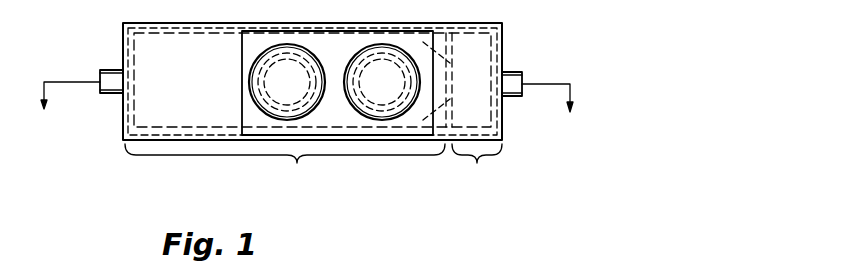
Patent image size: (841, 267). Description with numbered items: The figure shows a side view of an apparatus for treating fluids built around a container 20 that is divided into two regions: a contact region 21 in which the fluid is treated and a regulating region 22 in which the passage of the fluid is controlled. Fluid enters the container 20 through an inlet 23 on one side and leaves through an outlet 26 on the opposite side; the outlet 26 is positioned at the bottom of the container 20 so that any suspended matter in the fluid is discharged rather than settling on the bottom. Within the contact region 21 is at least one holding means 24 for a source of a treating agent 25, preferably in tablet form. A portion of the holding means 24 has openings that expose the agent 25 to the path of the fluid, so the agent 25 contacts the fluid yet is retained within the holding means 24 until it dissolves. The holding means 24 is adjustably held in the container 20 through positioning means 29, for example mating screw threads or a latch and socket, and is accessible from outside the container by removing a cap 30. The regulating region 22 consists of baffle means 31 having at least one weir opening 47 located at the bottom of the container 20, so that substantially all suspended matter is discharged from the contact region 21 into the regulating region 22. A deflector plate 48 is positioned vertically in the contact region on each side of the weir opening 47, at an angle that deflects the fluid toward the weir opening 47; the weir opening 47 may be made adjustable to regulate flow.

The container 20 is at (138, 144).
The contact region 21 is at (285, 163).
The regulating region 22 is at (477, 163).
The inlet 23 is at (110, 95).
The holding means 24 is at (367, 110).
The treating agent 25 is at (362, 100).
The outlet 26 is at (520, 72).
The positioning means 29 is at (240, 113).
The cap 30 is at (383, 120).
The baffle means 31 is at (455, 114).
The weir opening 47 is at (450, 82).
The deflector plate 48 is at (447, 117).